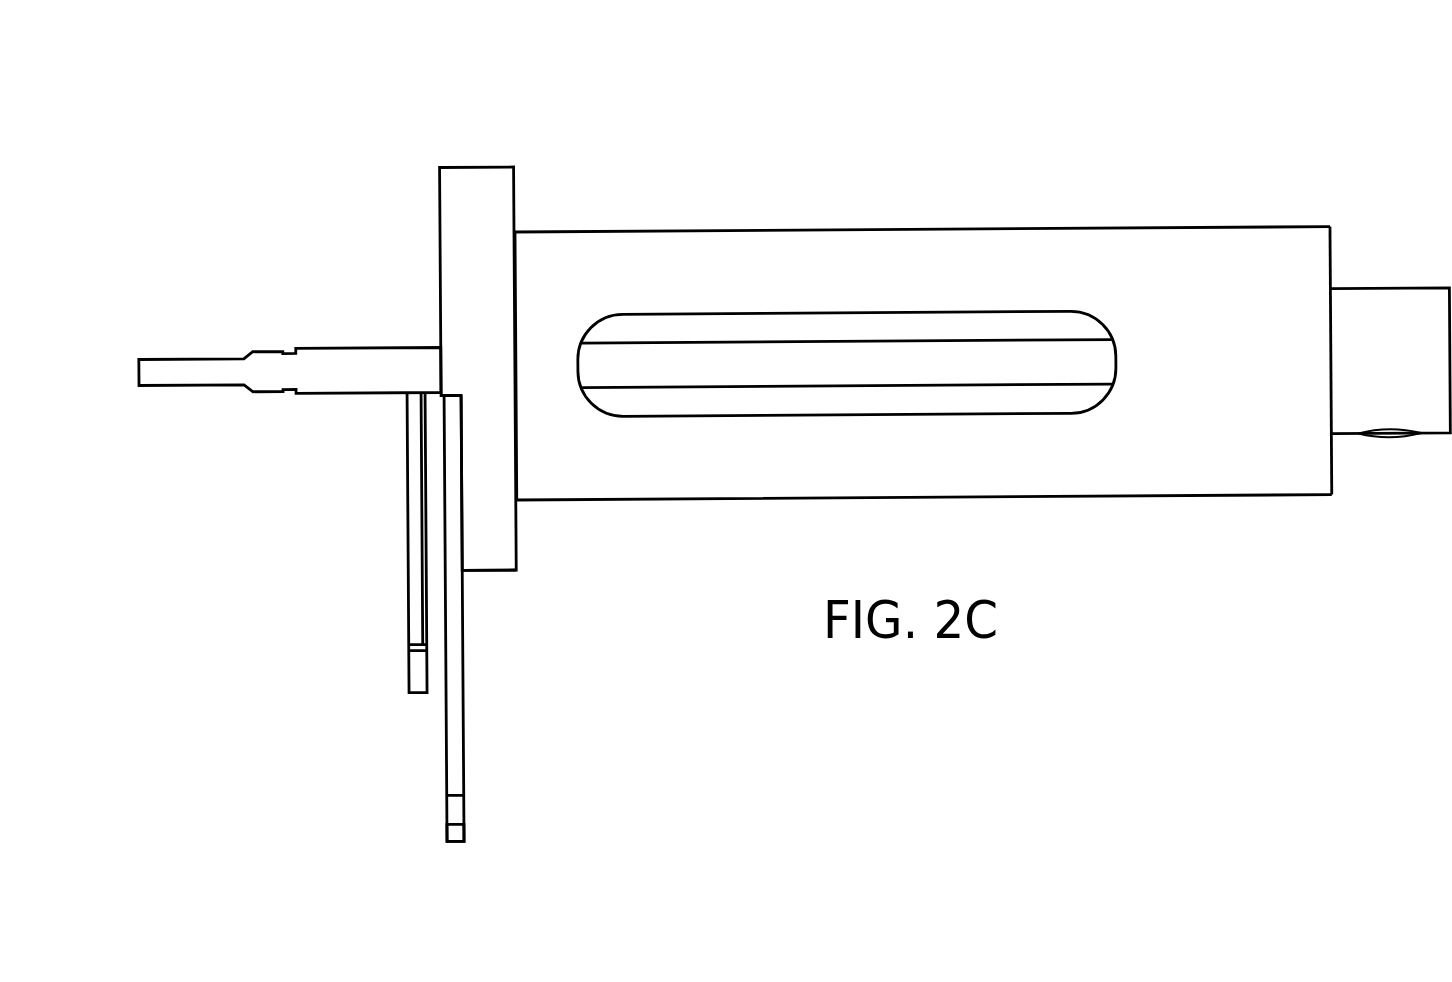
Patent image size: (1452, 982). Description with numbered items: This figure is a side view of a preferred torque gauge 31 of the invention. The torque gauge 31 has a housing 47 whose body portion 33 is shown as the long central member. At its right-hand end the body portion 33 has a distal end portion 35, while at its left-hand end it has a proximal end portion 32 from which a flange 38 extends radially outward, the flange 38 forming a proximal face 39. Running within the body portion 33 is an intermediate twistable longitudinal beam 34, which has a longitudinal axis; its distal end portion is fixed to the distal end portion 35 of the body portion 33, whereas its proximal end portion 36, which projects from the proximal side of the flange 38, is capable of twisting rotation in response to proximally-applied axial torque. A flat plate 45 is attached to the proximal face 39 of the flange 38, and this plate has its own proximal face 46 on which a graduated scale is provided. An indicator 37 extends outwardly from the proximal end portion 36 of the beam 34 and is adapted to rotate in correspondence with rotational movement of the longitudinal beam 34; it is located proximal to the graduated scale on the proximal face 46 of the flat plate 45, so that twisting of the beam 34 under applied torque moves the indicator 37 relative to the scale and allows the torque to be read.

The torque gauge 31 is at (1052, 117).
The proximal end portion 32 is at (564, 265).
The body portion 33 is at (937, 242).
The intermediate twistable longitudinal beam 34 is at (737, 352).
The distal end portion 35 is at (1378, 290).
The proximal end portion 36 is at (334, 355).
The indicator 37 is at (407, 558).
The flange 38 is at (498, 572).
The proximal face 39 is at (441, 210).
The flat plate 45 is at (446, 839).
The proximal face 46 is at (445, 775).
The housing 47 is at (1232, 365).